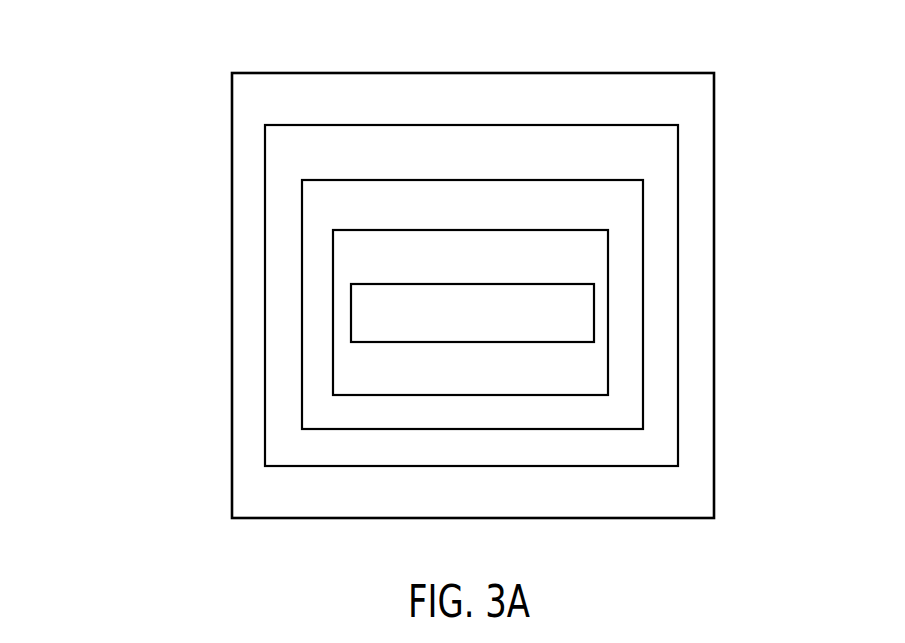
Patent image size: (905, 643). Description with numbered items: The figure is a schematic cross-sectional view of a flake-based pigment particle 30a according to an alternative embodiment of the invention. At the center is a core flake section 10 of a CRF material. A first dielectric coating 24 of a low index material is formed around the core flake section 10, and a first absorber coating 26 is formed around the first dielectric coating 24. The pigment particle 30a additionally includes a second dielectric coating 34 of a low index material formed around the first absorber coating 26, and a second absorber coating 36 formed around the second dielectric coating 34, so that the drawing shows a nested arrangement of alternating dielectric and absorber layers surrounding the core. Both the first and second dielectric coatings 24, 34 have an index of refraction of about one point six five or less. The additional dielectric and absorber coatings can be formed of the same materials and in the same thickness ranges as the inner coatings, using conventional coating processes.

The second absorber coating 36 is at (673, 78).
The second dielectric coating 34 is at (653, 158).
The first absorber coating 26 is at (632, 227).
The first dielectric coating 24 is at (597, 268).
The core flake section 10 is at (568, 322).
The pigment particle 30a is at (207, 285).